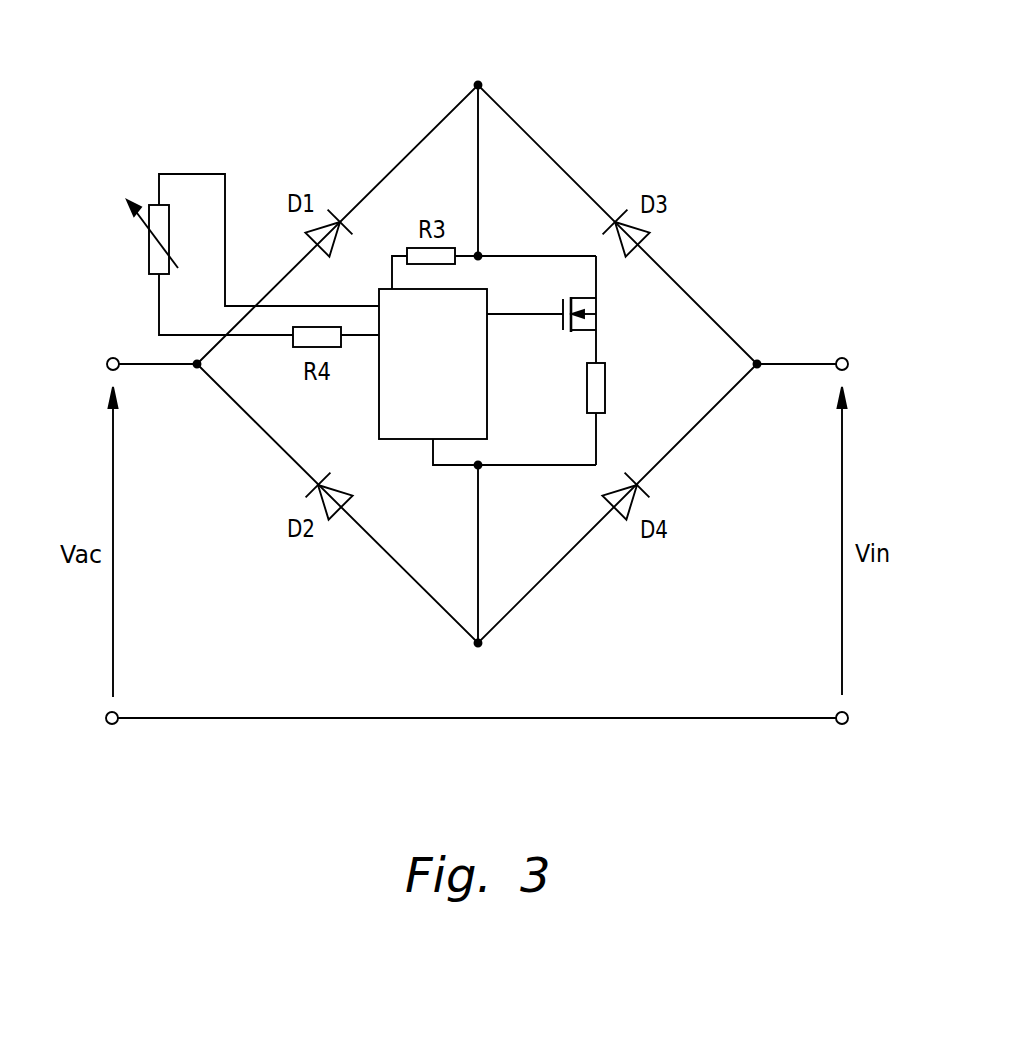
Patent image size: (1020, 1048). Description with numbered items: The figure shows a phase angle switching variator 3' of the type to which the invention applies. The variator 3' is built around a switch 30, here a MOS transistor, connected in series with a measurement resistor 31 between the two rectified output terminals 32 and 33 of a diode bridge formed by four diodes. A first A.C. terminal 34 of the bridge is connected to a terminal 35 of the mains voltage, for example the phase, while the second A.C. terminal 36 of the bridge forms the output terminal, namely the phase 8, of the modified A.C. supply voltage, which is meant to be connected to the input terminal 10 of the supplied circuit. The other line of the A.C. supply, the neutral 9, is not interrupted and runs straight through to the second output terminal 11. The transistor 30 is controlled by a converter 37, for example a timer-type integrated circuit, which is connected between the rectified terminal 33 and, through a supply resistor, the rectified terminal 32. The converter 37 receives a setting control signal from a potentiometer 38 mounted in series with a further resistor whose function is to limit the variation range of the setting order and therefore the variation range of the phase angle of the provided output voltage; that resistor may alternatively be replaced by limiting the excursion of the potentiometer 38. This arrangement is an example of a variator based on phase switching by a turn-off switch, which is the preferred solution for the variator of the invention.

The phase angle switching variator 3' is at (515, 338).
The rectified output terminal 32 is at (478, 85).
The rectified output terminal 33 is at (478, 643).
The first A.C. terminal 34 is at (197, 367).
The second A.C. terminal 36 is at (757, 364).
The mains terminal 35 is at (107, 364).
The phase 8 is at (798, 364).
The neutral 9 is at (267, 718).
The input terminal 10 is at (848, 363).
The output return terminal 11 is at (848, 718).
The switch 30 is at (593, 306).
The measurement resistor 31 is at (605, 390).
The converter 37 is at (379, 401).
The potentiometer 38 is at (149, 252).